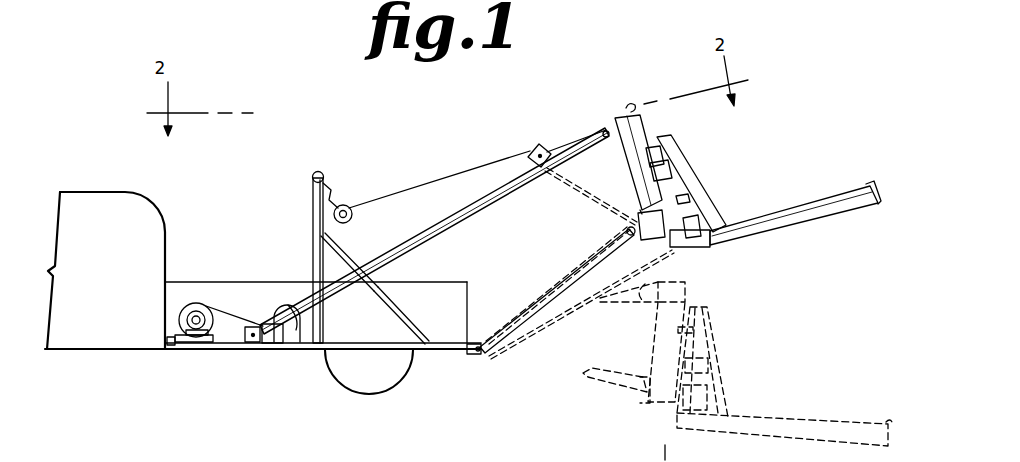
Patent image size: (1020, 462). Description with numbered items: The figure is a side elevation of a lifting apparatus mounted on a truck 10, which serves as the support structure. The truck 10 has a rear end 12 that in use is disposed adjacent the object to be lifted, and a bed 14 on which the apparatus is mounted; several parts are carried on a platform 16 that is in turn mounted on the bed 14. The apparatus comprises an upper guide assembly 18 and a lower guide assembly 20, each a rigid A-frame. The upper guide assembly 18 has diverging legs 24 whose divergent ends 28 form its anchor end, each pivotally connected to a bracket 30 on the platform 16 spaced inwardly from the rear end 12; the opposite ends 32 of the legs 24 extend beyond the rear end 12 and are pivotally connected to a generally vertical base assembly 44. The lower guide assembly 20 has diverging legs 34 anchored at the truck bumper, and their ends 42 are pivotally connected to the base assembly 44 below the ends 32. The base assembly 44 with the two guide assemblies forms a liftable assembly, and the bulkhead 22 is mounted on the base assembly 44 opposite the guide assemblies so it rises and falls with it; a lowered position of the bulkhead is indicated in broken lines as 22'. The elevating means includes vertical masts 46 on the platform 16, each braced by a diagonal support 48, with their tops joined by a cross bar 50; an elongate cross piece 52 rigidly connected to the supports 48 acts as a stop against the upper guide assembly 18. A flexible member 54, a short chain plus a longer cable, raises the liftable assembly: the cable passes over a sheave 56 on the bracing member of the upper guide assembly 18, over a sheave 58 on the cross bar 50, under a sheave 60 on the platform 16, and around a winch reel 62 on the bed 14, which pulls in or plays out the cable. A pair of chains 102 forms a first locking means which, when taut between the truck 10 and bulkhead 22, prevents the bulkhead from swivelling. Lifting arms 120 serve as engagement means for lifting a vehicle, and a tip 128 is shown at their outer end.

The truck 10 is at (170, 349).
The rear end 12 is at (470, 287).
The bed 14 is at (306, 344).
The platform 16 is at (210, 345).
The upper guide assembly 18 is at (455, 196).
The lower guide assembly 20 is at (560, 308).
The bulkhead 22 is at (703, 191).
The fork carriage in lowered position 22' is at (737, 364).
The legs 24 is at (426, 235).
The divergent ends 28 is at (269, 320).
The bracket 30 is at (251, 341).
The opposite ends 32 is at (605, 128).
The legs 34 is at (607, 241).
The ends 42 is at (632, 235).
The base assembly 44 is at (654, 140).
The masts 46 is at (312, 179).
The diagonal support 48 is at (403, 308).
The cross bar 50 is at (322, 170).
The cross piece 52 is at (357, 262).
The flexible member 54 is at (402, 182).
The sheave 56 is at (534, 144).
The sheave 58 is at (348, 206).
The sheave 60 is at (278, 309).
The winch reel 62 is at (190, 304).
The chains 102 is at (518, 345).
The lifting arms 120 is at (787, 213).
The tine tip 128 is at (875, 192).